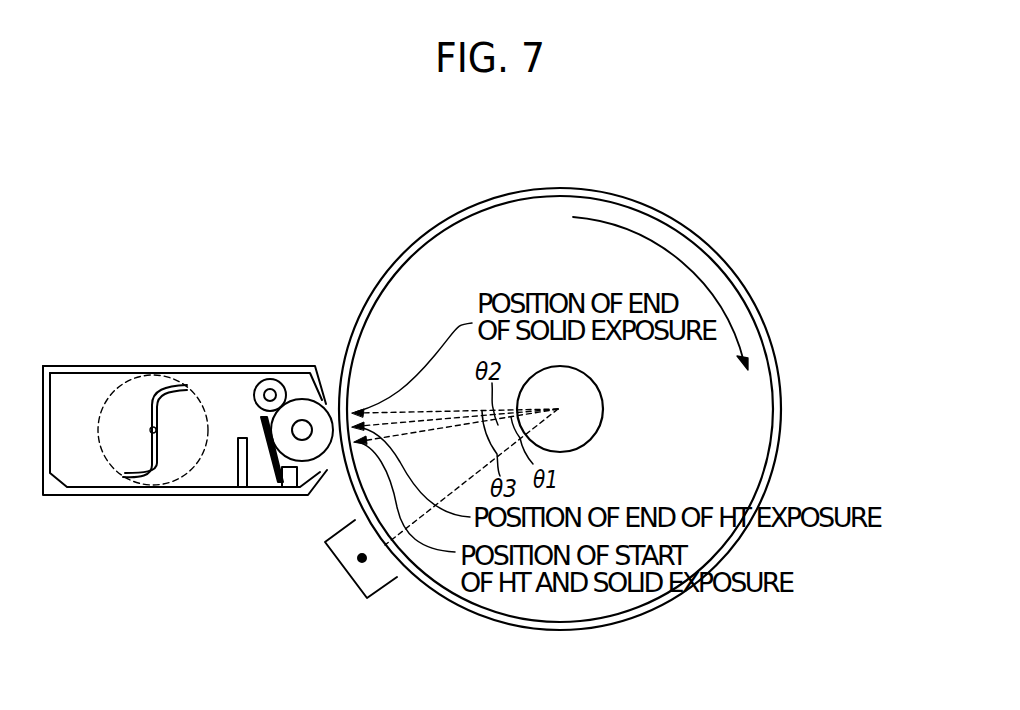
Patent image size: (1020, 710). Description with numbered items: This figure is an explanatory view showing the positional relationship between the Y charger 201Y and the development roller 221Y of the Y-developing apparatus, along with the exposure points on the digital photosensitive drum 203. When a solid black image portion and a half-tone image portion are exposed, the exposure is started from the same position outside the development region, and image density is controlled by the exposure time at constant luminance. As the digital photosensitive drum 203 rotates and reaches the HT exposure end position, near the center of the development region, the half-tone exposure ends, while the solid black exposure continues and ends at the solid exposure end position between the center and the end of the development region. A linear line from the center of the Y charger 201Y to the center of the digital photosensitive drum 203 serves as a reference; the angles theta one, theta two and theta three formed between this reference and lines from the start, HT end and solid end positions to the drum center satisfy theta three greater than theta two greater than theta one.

The digital photosensitive drum 203 is at (750, 438).
The development roller 221Y is at (303, 450).
The Y charger 201Y is at (358, 582).